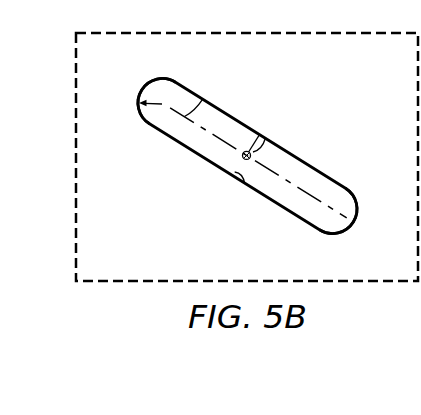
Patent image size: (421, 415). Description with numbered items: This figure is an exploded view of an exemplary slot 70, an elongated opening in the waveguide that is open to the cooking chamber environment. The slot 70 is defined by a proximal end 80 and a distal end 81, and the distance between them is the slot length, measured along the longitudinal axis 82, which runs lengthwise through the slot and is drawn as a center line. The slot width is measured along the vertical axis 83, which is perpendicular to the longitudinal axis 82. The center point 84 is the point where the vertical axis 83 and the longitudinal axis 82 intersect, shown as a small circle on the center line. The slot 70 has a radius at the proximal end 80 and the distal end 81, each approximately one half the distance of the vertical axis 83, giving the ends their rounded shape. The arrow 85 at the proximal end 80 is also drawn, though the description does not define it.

The slot 70 is at (203, 184).
The proximal end 80 is at (353, 224).
The distal end 81 is at (141, 89).
The longitudinal axis 82 is at (203, 98).
The vertical axis 83 is at (245, 185).
The center point 84 is at (266, 138).
The direction arrow 85 is at (144, 121).